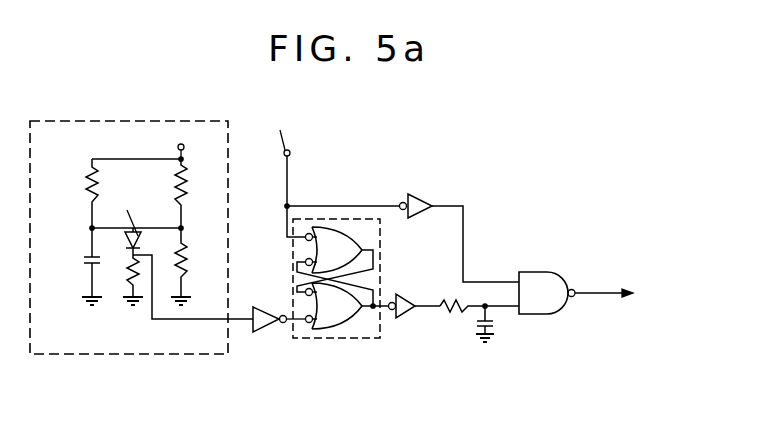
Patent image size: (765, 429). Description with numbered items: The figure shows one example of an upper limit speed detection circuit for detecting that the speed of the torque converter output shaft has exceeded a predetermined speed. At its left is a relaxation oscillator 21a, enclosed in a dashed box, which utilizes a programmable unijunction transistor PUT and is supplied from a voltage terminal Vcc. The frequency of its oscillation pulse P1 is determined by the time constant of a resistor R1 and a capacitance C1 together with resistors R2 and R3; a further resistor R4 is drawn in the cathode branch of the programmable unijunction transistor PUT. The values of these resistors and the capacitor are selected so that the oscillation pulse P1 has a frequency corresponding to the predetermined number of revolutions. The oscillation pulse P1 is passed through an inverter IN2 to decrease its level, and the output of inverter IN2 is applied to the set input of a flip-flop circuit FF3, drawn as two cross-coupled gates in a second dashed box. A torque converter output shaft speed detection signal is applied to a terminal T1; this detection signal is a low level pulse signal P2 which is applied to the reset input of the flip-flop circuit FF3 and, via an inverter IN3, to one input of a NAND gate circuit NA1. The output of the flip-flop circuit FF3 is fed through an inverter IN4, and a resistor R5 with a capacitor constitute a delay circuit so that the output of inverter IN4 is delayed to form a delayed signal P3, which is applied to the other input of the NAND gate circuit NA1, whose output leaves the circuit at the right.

The relaxation oscillator 21a is at (229, 121).
The supply voltage terminal Vcc is at (199, 148).
The resistor R1 is at (88, 181).
The resistor R2 is at (188, 184).
The resistor R3 is at (194, 258).
The resistor R4 is at (128, 280).
The resistor R5 is at (452, 312).
The programmable unijunction transistor PUT is at (135, 219).
The capacitance C1 is at (83, 258).
The oscillation pulse P1 is at (193, 299).
The low level pulse signal P2 is at (281, 222).
The delayed signal P3 is at (475, 244).
The terminal T1 is at (294, 164).
The inverter IN2 is at (268, 328).
The inverter IN3 is at (419, 201).
The inverter IN4 is at (408, 320).
The flip-flop circuit FF3 is at (330, 341).
The NAND gate circuit NA1 is at (563, 312).